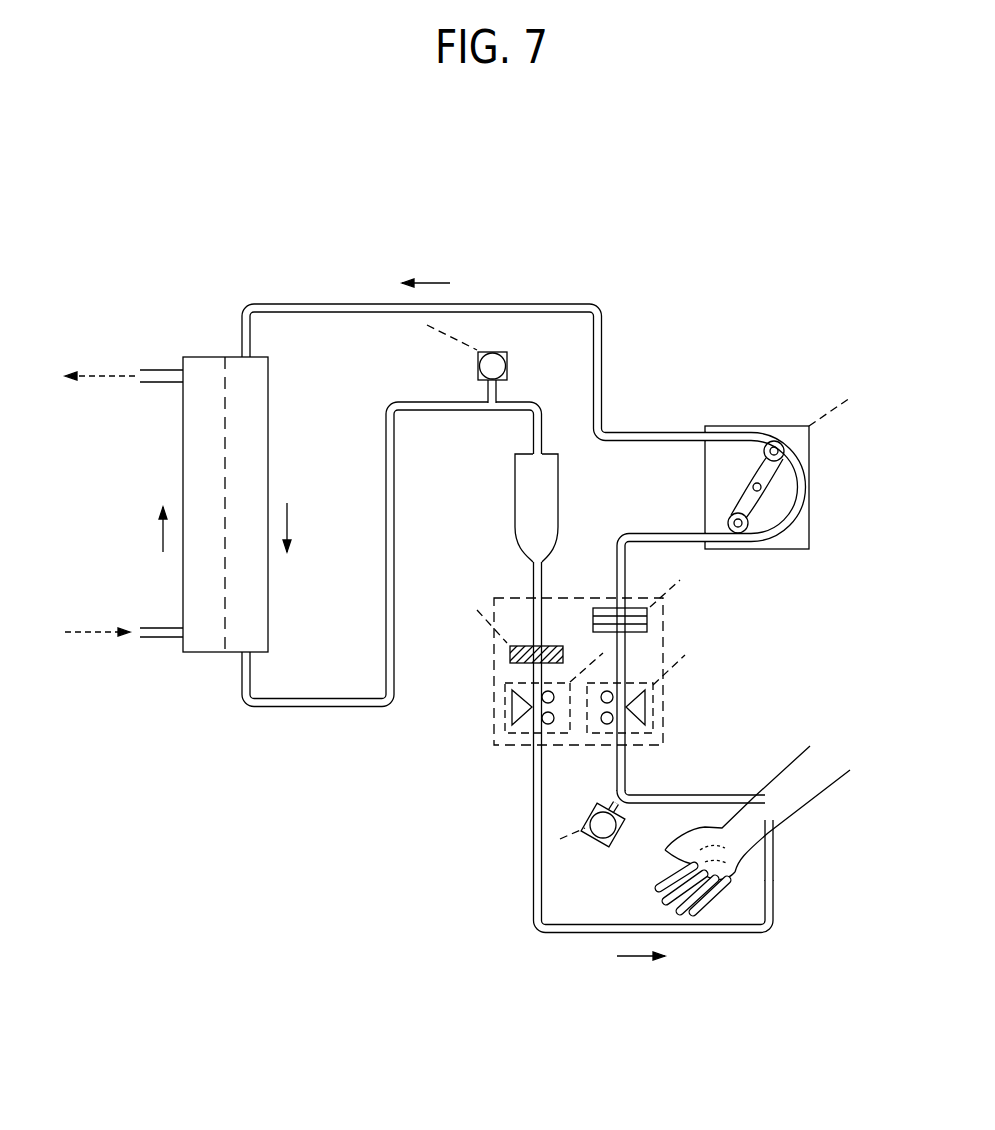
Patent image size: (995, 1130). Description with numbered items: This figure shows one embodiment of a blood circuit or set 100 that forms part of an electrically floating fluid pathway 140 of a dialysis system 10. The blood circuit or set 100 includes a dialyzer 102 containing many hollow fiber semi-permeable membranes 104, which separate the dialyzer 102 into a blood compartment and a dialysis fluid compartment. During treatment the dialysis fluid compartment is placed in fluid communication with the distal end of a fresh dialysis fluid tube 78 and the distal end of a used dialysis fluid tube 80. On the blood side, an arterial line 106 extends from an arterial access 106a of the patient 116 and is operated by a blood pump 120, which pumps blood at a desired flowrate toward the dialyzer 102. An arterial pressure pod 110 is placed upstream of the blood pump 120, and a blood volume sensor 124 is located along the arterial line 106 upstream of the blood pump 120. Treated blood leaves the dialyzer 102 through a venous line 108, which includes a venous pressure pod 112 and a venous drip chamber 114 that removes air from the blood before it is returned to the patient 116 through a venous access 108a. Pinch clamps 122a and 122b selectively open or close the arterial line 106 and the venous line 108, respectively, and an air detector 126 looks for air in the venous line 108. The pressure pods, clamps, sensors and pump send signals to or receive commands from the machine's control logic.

The system 10 is at (603, 185).
The fresh dialysis fluid tube 78 is at (160, 628).
The used dialysis fluid tube 80 is at (163, 369).
The blood circuit or set 100 is at (596, 303).
The dialyzer 102 is at (268, 473).
The hollow fiber semi-permeable membranes 104 is at (226, 597).
The arterial line 106 is at (652, 431).
The arterial access 106a is at (703, 795).
The venous line 108 is at (580, 924).
The venous access 108a is at (774, 850).
The arterial pressure pod 110 is at (592, 810).
The venous pressure pod 112 is at (501, 352).
The venous drip chamber 114 is at (513, 500).
The patient 116 is at (803, 752).
The blood pump 120 is at (778, 425).
The pinch clamp 122a is at (654, 705).
The pinch clamp 122b is at (505, 708).
The blood volume sensor 124 is at (648, 622).
The air detector 126 is at (510, 655).
The electrically floating fluid pathway 140 is at (246, 303).